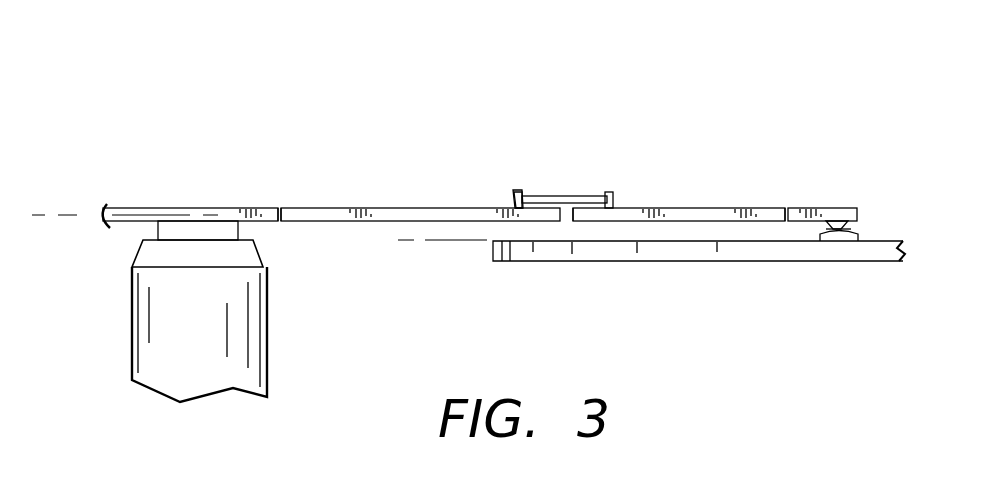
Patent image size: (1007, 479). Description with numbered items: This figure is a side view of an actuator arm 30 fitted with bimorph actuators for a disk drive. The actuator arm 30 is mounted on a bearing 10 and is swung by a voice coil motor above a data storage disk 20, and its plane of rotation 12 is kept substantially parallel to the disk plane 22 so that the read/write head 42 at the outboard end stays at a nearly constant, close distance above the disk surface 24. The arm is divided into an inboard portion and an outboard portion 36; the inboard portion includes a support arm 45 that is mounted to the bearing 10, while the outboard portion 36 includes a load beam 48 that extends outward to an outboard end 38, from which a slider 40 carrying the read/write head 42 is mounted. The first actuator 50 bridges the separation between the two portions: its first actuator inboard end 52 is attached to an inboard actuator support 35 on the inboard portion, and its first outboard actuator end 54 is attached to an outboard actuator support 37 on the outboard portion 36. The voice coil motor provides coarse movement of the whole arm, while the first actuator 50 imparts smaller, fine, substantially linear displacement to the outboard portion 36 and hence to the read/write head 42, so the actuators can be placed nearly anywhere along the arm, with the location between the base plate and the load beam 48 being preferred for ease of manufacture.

The bearing 10 is at (195, 232).
The plane of rotation 12 is at (75, 212).
The data storage disk 20 is at (537, 254).
The disk plane 22 is at (467, 240).
The disk surface 24 is at (649, 241).
The actuator arm 30 is at (468, 176).
The inboard actuator support 35 is at (512, 200).
The outboard portion 36 is at (710, 208).
The outboard actuator support 37 is at (617, 191).
The outboard end 38 is at (837, 208).
The slider 40 is at (810, 232).
The read/write head 42 is at (863, 233).
The support arm 45 is at (387, 207).
The load beam 48 is at (765, 208).
The first actuator 50 is at (558, 196).
The first actuator inboard end 52 is at (535, 192).
The first outboard actuator end 54 is at (597, 193).